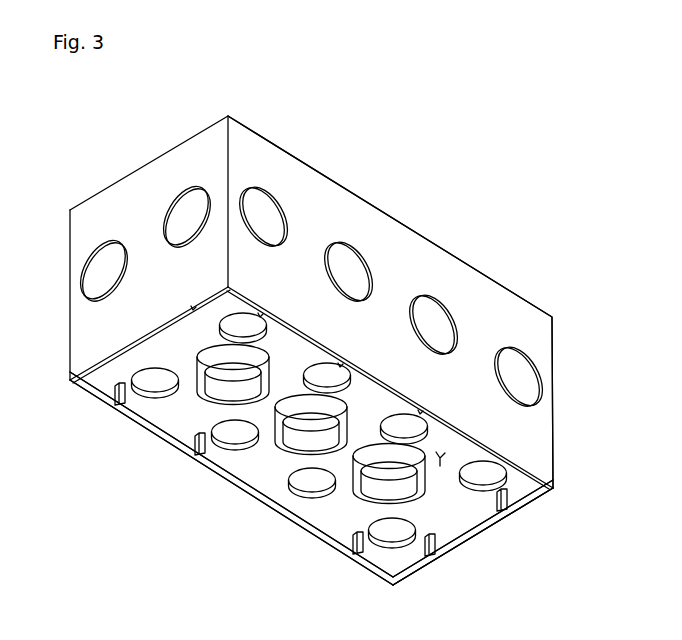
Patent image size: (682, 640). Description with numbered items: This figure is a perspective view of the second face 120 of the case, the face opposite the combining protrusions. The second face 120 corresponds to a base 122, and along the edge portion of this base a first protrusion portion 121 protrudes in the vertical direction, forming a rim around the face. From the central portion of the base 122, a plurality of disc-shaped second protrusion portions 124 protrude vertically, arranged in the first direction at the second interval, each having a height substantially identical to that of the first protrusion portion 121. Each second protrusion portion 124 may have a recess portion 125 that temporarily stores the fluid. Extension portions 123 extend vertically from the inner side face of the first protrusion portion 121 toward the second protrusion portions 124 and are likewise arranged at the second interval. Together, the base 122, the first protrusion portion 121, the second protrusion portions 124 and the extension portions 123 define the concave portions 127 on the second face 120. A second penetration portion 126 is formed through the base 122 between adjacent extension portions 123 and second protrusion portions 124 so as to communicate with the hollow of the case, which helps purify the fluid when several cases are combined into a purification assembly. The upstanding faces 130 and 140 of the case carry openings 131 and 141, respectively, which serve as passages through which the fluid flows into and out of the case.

The second face 120 is at (128, 443).
The first protrusion portion 121 is at (487, 537).
The base 122 is at (462, 550).
The extension portions 123 is at (503, 525).
The second protrusion portions 124 is at (366, 457).
The recess portion 125 is at (309, 420).
The second penetration portion 126 is at (377, 582).
The concave portions 127 is at (440, 455).
The face 130 is at (370, 231).
The openings 131 is at (517, 375).
The face 140 is at (179, 164).
The openings 141 is at (188, 218).